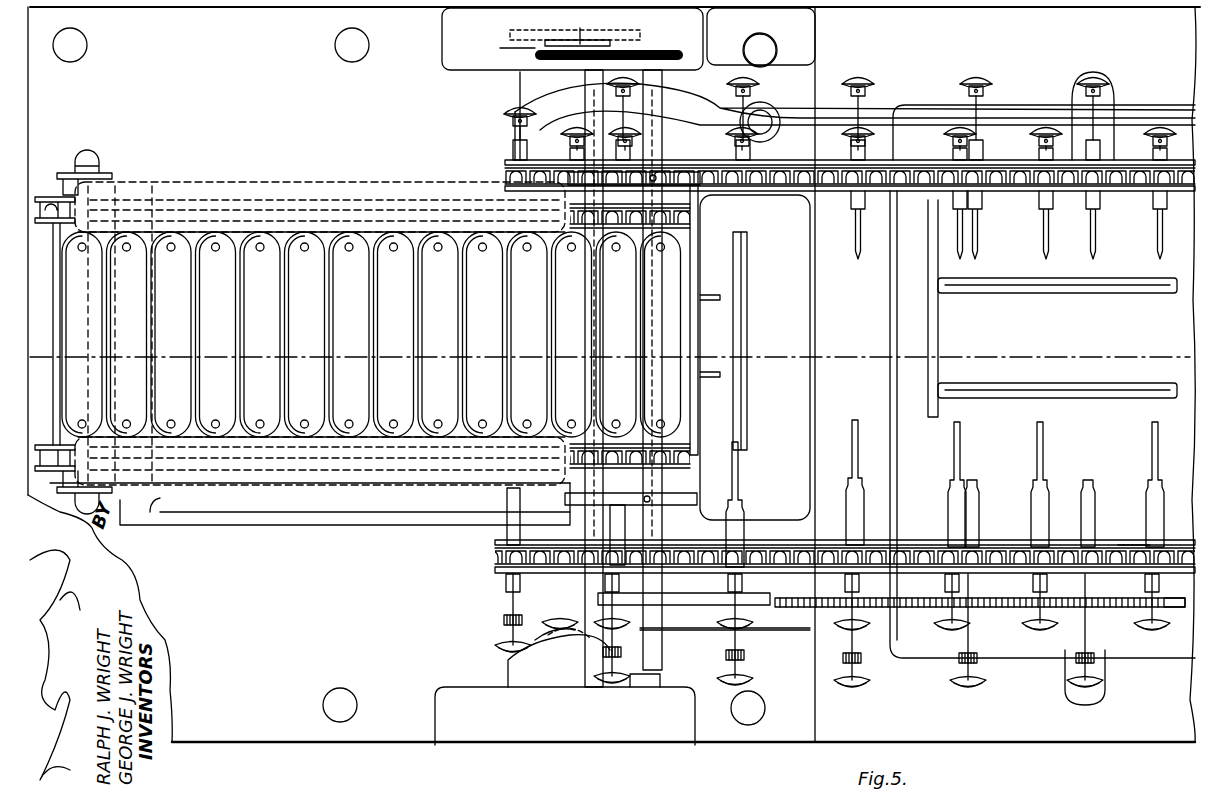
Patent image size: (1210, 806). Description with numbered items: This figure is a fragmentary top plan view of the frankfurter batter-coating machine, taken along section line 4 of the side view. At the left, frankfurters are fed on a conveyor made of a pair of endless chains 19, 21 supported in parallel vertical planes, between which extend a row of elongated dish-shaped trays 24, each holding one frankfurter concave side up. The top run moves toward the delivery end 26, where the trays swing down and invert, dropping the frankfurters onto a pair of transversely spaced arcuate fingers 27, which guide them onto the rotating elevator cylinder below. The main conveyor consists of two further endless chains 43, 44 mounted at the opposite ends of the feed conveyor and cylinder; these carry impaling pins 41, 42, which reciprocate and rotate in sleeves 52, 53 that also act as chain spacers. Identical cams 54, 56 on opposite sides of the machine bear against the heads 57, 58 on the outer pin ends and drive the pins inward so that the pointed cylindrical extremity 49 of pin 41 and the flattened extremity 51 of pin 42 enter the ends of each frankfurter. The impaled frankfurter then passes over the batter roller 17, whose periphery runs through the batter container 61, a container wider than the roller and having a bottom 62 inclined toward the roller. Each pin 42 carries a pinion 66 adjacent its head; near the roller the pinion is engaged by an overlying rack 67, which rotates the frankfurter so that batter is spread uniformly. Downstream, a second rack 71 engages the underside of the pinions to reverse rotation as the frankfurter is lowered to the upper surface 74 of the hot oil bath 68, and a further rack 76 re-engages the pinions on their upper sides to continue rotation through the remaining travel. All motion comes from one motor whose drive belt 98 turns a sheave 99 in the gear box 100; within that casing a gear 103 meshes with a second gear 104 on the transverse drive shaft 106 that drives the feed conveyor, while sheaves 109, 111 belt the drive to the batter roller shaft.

The section line 4- 4 is at (1192, 338).
The batter roller 17 is at (747, 333).
The endless chain 19 is at (38, 215).
The endless chain 21 is at (55, 480).
The dish-shaped tray 24 is at (185, 248).
The delivery end 26 is at (700, 283).
The arcuate finger 27 is at (722, 300).
The impaling pin 41 is at (1100, 102).
The impaling pin 42 is at (744, 512).
The endless chain 43 is at (510, 170).
The endless chain 44 is at (497, 555).
The pointed cylindrical extremity 49 is at (1046, 252).
The flattened extremity 51 is at (852, 447).
The sleeve 52 is at (782, 160).
The sleeve 53 is at (1130, 556).
The cam 54 is at (512, 86).
The cam 56 is at (508, 672).
The head 57 is at (500, 108).
The head 58 is at (500, 648).
The batter container 61 is at (370, 500).
The bottom 62 is at (296, 515).
The pinion 66 is at (862, 660).
The rack 67 is at (662, 602).
The hot oil bath 68 is at (1136, 356).
The second rack 71 is at (790, 598).
The upper surface 74 is at (1060, 330).
The rack 76 is at (1162, 612).
The drive belt 98 is at (638, 36).
The sheave 99 is at (512, 40).
The gear box 100 is at (445, 42).
The gear 103 is at (540, 38).
The second gear 104 is at (690, 52).
The drive shaft 106 is at (663, 103).
The sheave 109 is at (618, 24).
The sheave 111 is at (580, 38).